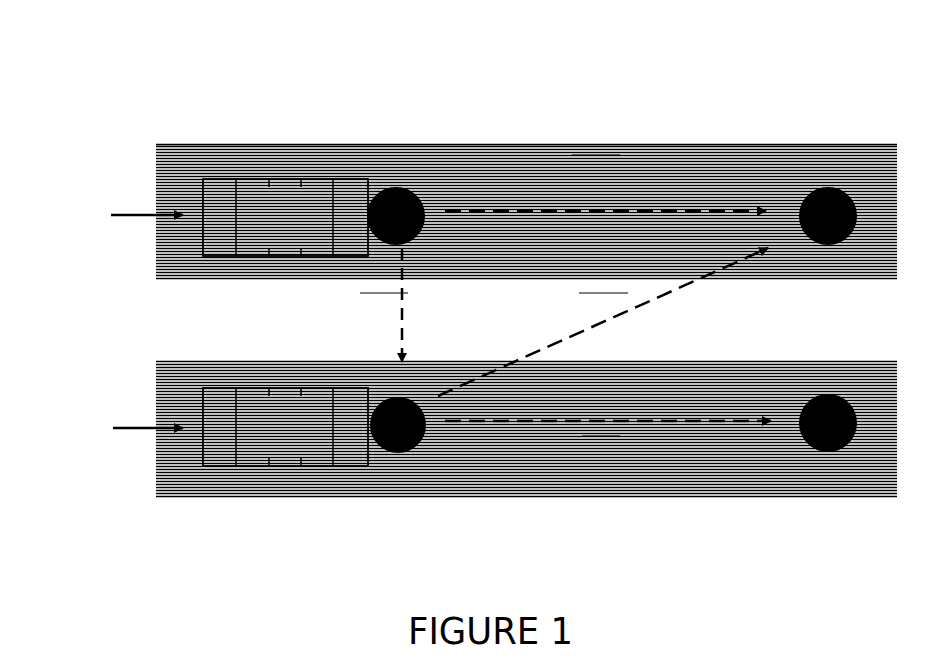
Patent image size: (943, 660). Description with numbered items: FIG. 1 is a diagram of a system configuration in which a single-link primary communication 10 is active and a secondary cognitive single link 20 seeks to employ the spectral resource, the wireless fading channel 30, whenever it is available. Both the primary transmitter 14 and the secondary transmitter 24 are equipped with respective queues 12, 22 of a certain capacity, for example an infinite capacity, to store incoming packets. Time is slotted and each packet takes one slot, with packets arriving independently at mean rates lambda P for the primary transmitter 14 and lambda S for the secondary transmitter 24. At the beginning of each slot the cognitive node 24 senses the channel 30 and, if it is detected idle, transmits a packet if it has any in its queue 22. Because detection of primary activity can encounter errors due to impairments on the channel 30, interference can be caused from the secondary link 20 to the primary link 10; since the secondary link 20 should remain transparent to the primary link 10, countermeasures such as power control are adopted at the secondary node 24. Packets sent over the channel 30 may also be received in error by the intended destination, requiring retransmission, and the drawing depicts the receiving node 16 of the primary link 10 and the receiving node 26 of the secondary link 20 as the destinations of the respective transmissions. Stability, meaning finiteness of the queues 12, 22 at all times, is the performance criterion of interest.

The primary link 10 is at (168, 242).
The queue 12 is at (283, 155).
The primary transmitter 14 is at (403, 180).
The primary receiver 16 is at (835, 175).
The secondary link 20 is at (188, 457).
The queue 22 is at (280, 375).
The secondary transmitter 24 is at (393, 445).
The secondary receiver 26 is at (825, 445).
The channel 30 is at (793, 118).